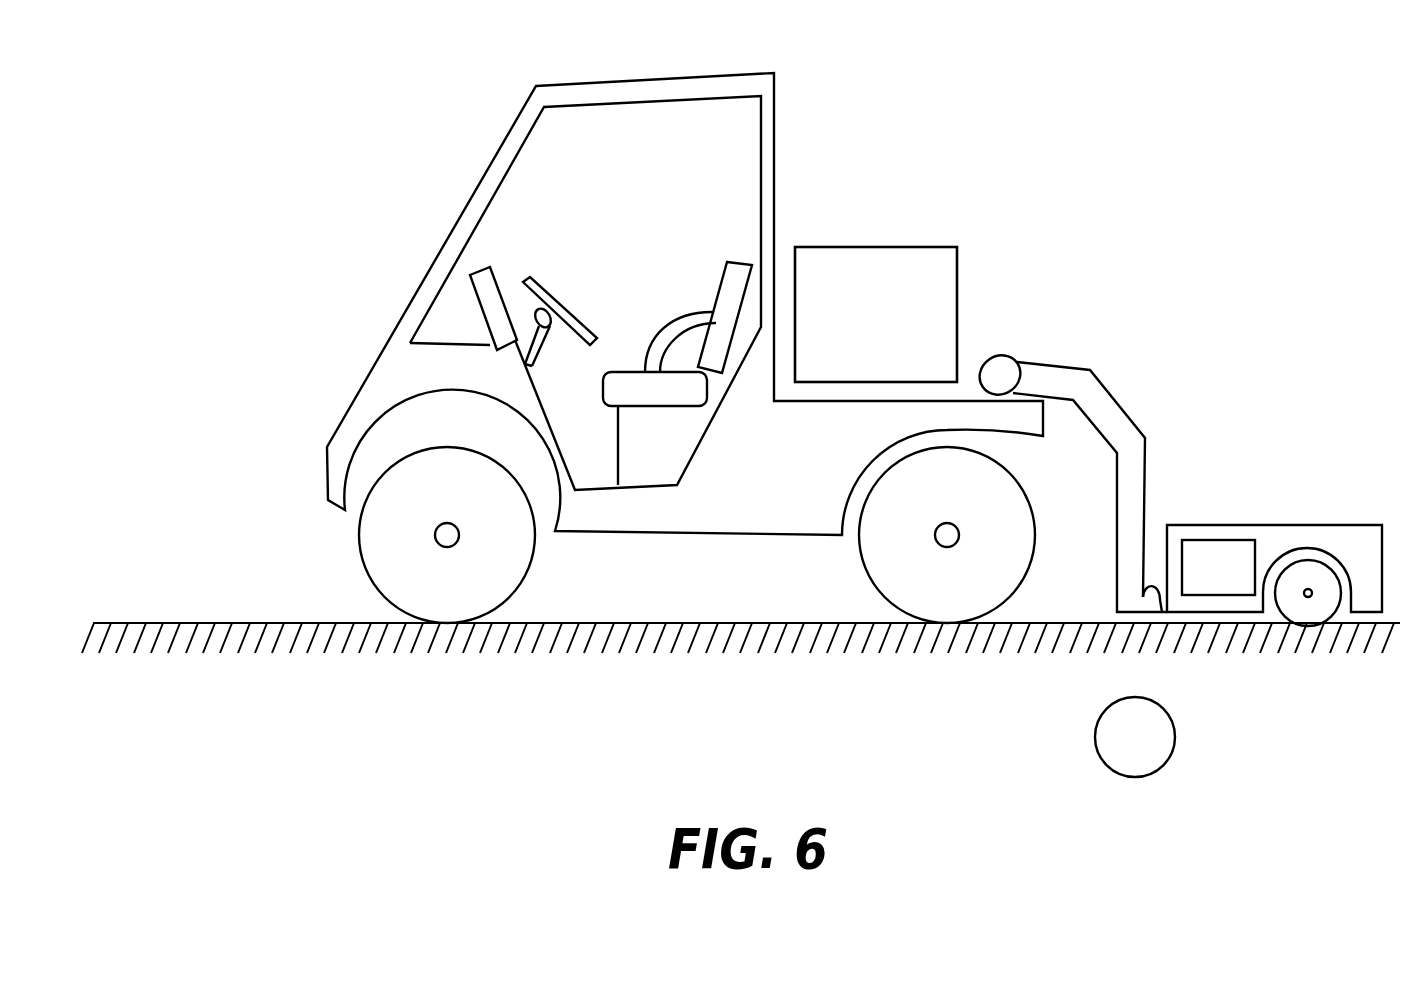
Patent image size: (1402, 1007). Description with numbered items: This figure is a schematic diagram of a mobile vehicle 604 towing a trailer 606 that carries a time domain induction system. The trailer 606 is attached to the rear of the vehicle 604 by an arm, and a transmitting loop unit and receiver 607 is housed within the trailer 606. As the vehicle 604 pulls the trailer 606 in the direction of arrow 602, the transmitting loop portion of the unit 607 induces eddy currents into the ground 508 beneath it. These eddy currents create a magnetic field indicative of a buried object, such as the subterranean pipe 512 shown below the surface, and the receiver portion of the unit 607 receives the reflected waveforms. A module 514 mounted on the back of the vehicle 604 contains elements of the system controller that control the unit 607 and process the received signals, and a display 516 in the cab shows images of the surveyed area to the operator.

The mobile vehicle 604 is at (340, 167).
The arrow 602 is at (255, 427).
The display 516 is at (490, 266).
The module 514 is at (877, 247).
The trailer 606 is at (1243, 523).
The transmitting loop unit and receiver 607 is at (1218, 567).
The ground 508 is at (168, 623).
The subterranean pipe 512 is at (1095, 737).